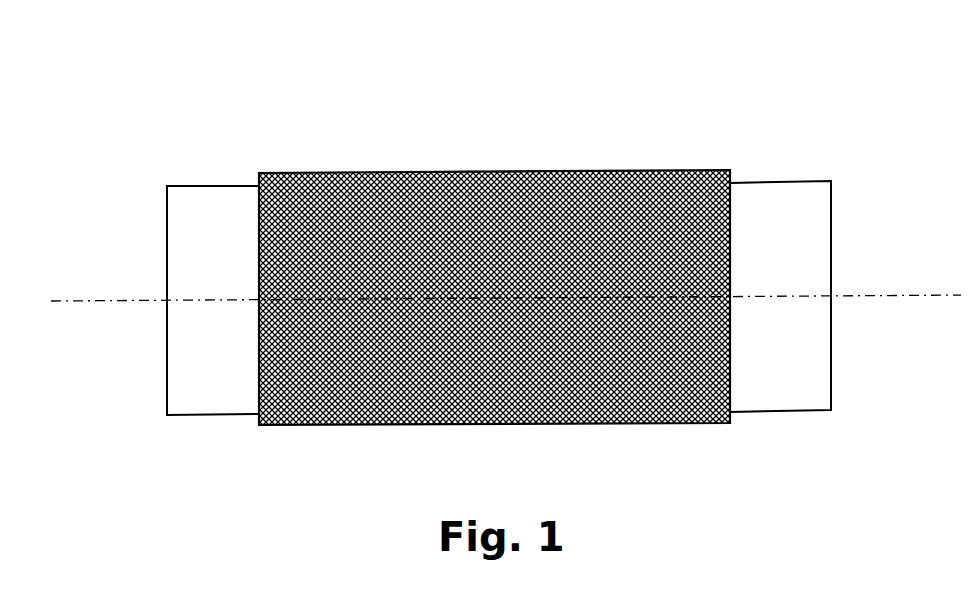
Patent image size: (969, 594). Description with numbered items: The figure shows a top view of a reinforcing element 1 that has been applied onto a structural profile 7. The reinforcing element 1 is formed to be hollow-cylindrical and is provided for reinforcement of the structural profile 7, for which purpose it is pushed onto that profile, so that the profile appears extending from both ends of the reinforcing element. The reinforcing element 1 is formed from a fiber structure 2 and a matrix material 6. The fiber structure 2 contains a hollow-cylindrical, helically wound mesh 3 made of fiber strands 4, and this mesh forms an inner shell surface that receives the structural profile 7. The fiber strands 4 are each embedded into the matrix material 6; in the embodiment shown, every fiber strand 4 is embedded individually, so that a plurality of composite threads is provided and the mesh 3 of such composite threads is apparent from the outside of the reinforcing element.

The reinforcing element 1 is at (573, 125).
The fiber structure 2 is at (388, 152).
The mesh 3 is at (430, 163).
The fiber strands 4 is at (485, 163).
The matrix material 6 is at (580, 163).
The structural profile 7 is at (799, 192).